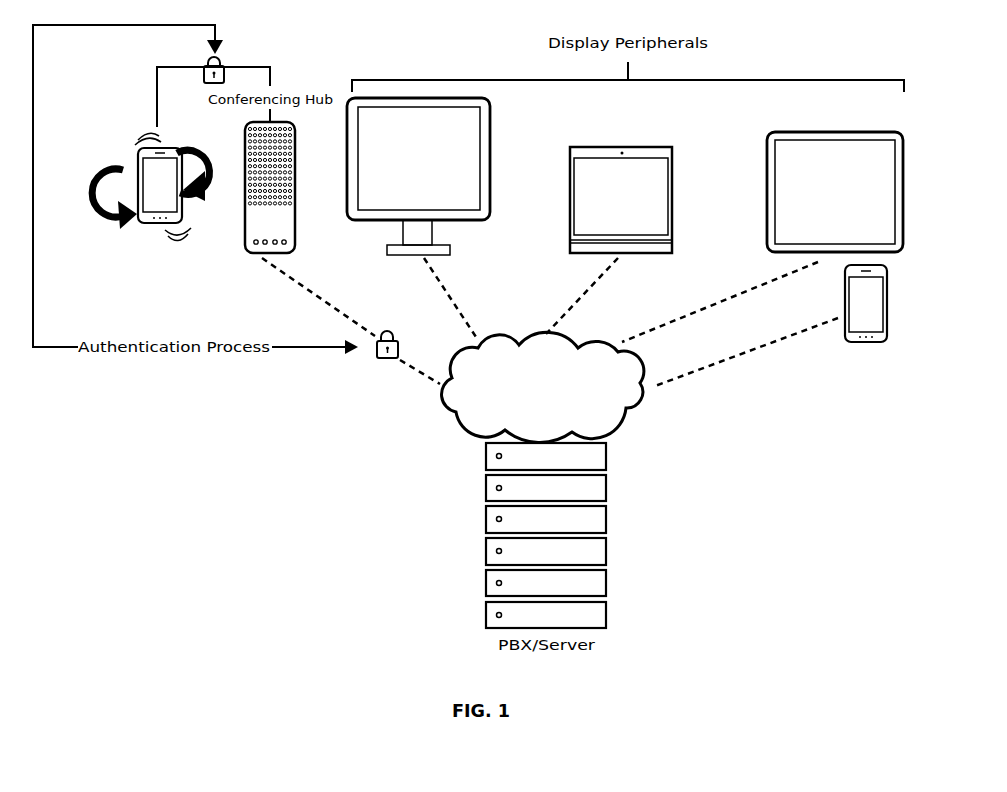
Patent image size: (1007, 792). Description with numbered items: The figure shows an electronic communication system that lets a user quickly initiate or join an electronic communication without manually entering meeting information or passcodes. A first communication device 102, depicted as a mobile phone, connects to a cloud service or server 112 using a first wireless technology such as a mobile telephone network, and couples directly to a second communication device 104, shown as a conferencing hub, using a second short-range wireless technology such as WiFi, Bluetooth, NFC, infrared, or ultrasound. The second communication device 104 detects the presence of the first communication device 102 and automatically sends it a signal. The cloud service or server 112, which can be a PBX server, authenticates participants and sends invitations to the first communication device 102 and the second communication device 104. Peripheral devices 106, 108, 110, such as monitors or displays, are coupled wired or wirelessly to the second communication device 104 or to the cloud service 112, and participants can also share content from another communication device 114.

The first communication device 102 is at (136, 160).
The second communication device 104 is at (295, 218).
The peripheral device 106 is at (490, 192).
The peripheral device 108 is at (672, 205).
The peripheral device 110 is at (903, 207).
The cloud service or server 112 is at (648, 452).
The other communication device 114 is at (887, 310).